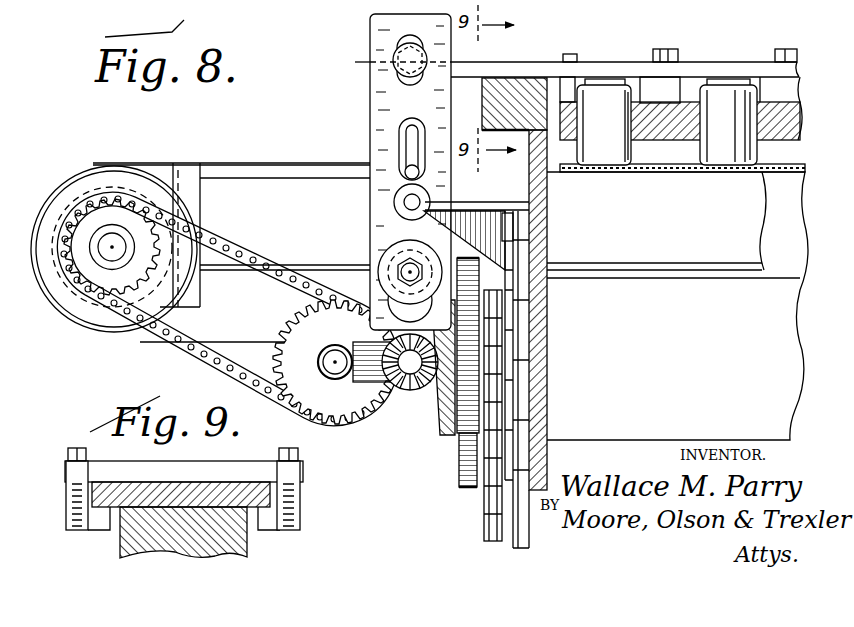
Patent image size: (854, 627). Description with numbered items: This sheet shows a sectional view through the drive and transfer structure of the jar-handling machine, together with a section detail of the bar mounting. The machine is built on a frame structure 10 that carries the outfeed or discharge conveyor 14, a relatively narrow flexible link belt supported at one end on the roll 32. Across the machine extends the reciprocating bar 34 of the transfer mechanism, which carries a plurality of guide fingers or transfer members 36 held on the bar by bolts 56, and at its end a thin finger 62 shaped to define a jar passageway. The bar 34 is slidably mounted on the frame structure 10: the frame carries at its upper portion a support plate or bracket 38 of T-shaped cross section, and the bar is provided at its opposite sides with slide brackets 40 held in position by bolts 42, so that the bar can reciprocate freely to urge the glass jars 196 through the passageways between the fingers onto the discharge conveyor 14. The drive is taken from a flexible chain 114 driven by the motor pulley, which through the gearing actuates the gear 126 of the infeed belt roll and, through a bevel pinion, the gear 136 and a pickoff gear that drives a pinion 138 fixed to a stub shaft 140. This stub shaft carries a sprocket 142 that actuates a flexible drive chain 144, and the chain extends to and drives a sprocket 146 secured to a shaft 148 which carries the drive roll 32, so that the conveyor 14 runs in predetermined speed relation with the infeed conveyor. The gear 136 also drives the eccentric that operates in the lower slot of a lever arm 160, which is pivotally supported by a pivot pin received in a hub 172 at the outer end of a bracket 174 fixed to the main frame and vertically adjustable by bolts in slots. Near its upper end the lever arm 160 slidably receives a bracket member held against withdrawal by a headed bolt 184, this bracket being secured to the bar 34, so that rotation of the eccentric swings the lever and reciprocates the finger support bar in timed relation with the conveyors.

In FIG. 8, the frame structure 10 is at (548, 452).
In FIG. 8, the outfeed or discharge conveyor belt 14 is at (217, 162).
In FIG. 8, the roll 32 is at (92, 182).
In FIG. 8, the reciprocating bar 34 is at (716, 70).
In FIG. 9, the reciprocating bar 34 is at (178, 468).
In FIG. 8, the guide fingers or transfer members 36 is at (664, 142).
In FIG. 9, the guide fingers or transfer members 36 is at (184, 506).
In FIG. 9, the support plate or bracket 38 is at (217, 549).
In FIG. 9, the slide brackets 40 is at (72, 520).
In FIG. 9, the bolts 42 is at (68, 454).
In FIG. 8, the bolts 56 is at (662, 52).
In FIG. 8, the finger 62 is at (566, 120).
In FIG. 8, the flexible chain 114 is at (505, 327).
In FIG. 8, the gear 126 is at (465, 492).
In FIG. 8, the gear 136 is at (428, 418).
In FIG. 8, the pinion 138 is at (335, 398).
In FIG. 8, the stub shaft 140 is at (240, 388).
In FIG. 8, the sprocket 142 is at (297, 312).
In FIG. 8, the flexible drive chain 144 is at (290, 232).
In FIG. 8, the sprocket 146 is at (138, 293).
In FIG. 8, the shaft 148 is at (112, 250).
In FIG. 8, the lever arm 160 is at (370, 121).
In FIG. 8, the hub 172 is at (400, 210).
In FIG. 8, the bracket 174 is at (496, 201).
In FIG. 8, the headed bolt 184 is at (392, 62).
In FIG. 8, the glass jars 196 is at (735, 168).